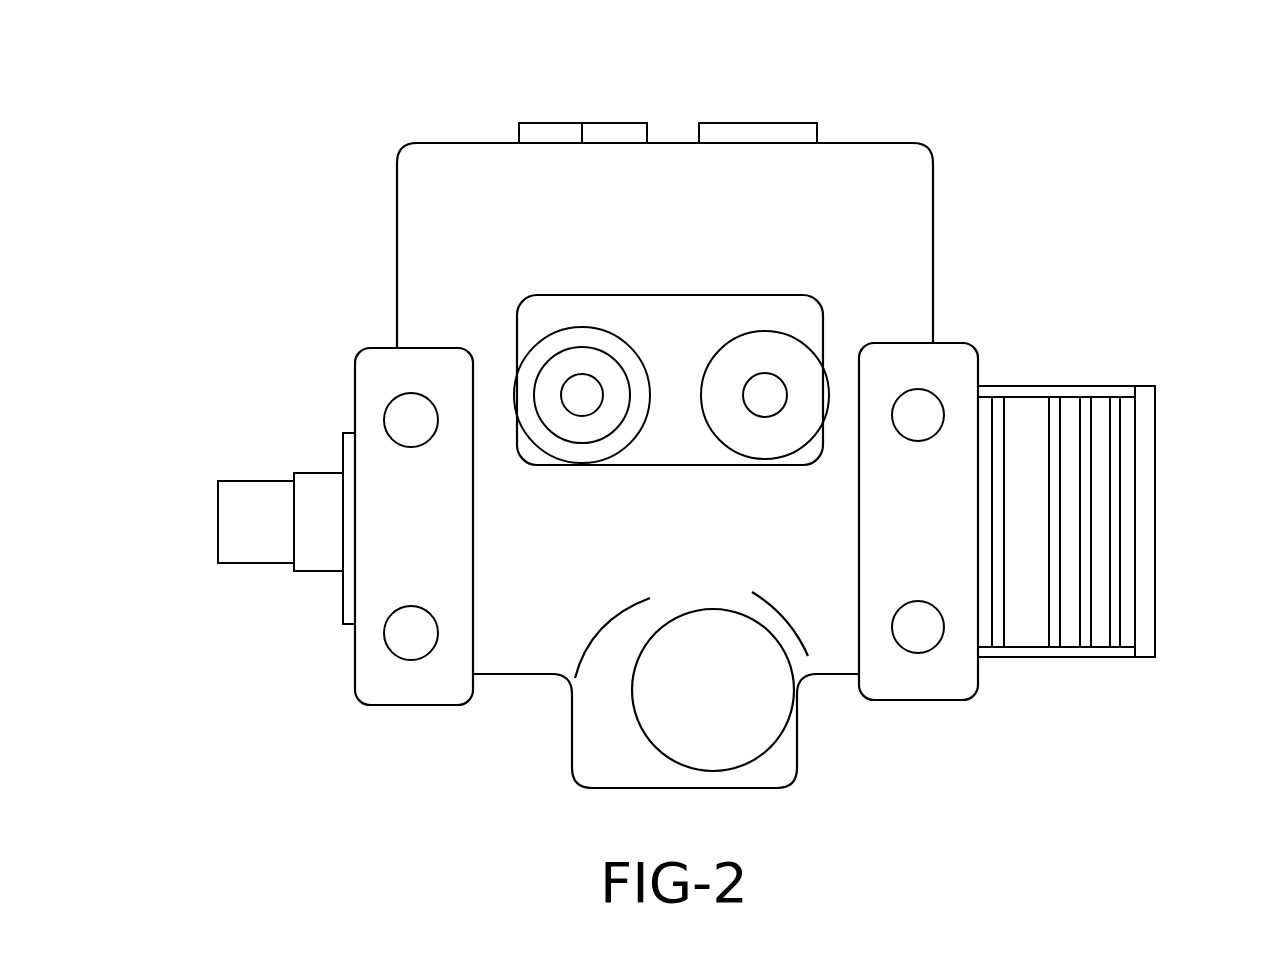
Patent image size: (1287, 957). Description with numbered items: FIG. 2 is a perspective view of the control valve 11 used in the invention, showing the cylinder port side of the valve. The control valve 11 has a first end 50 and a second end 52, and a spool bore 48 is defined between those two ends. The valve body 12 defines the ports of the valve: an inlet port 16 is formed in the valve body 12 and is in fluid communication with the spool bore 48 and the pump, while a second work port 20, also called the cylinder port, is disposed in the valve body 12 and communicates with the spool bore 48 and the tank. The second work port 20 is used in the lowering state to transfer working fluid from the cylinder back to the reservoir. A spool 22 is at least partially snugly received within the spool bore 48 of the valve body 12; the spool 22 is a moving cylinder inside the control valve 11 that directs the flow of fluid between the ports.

The control valve 11 is at (290, 126).
The valve body 12 is at (1140, 387).
The inlet port 16 is at (702, 788).
The second work port 20 is at (580, 385).
The spool 22 is at (230, 515).
The spool bore 48 is at (322, 593).
The first end 50 is at (343, 456).
The second end 52 is at (1155, 483).